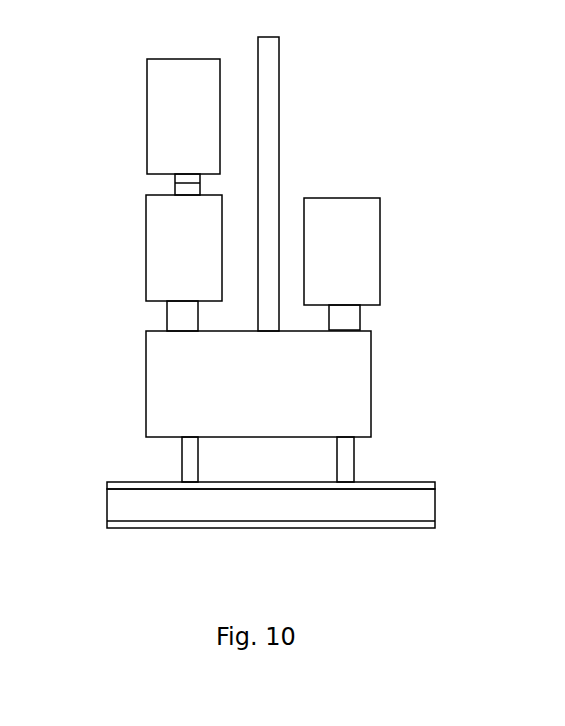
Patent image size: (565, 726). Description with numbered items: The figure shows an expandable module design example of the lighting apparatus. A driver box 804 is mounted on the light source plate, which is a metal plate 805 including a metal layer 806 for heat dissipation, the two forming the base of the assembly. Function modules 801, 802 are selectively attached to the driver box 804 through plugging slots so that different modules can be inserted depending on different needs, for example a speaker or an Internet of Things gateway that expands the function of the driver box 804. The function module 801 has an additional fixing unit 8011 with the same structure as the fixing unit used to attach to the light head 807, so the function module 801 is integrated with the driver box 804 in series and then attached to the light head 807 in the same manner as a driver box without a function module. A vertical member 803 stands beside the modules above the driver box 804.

The function module 801 is at (167, 205).
The additional fixing unit 8011 is at (192, 194).
The function module 802 is at (332, 208).
The support column 803 is at (280, 90).
The driver box 804 is at (348, 356).
The metal plate 805 is at (410, 483).
The metal layer 806 is at (425, 512).
The light head 807 is at (158, 73).